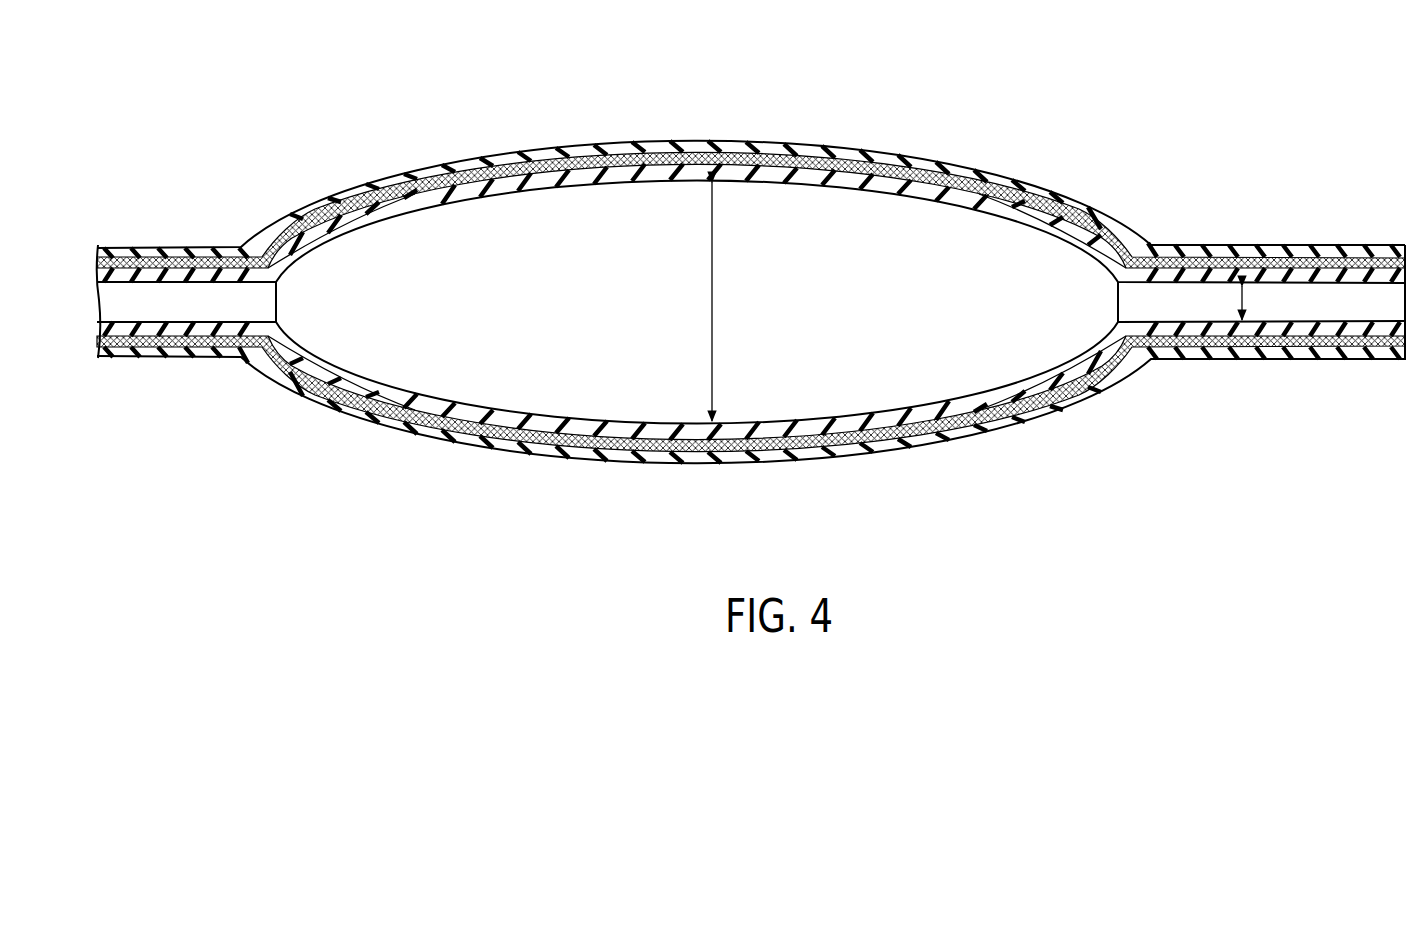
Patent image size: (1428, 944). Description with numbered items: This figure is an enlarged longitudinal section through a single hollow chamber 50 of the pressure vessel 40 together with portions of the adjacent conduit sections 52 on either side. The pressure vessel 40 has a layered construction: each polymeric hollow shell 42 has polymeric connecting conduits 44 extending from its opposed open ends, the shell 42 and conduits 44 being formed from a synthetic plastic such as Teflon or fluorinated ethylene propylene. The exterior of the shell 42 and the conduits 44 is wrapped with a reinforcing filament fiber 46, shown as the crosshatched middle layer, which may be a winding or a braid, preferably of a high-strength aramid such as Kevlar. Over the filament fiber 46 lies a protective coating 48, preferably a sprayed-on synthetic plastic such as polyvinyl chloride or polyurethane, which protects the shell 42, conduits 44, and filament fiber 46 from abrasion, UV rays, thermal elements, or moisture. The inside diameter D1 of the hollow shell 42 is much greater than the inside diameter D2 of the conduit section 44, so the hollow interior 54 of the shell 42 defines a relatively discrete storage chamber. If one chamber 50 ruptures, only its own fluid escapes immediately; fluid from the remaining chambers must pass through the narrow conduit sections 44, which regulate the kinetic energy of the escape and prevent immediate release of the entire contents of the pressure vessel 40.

The pressure vessel 40 is at (1012, 60).
The polymeric hollow shell 42 is at (559, 188).
The polymeric connecting conduit 44 is at (1304, 330).
The reinforcing filament fiber 46 is at (858, 466).
The protective coating 48 is at (581, 467).
The hollow chamber 50 is at (480, 463).
The conduit section 52 is at (148, 237).
The hollow interior 54 is at (591, 374).
The inside diameter of the hollow shell D1 is at (710, 278).
The inside diameter of the conduit section D2 is at (1238, 302).